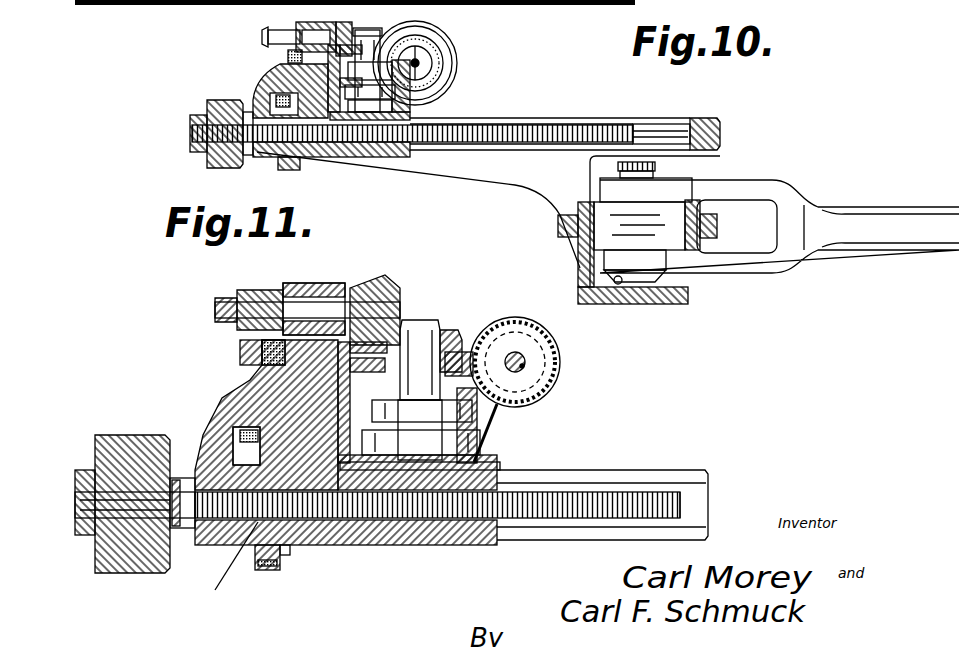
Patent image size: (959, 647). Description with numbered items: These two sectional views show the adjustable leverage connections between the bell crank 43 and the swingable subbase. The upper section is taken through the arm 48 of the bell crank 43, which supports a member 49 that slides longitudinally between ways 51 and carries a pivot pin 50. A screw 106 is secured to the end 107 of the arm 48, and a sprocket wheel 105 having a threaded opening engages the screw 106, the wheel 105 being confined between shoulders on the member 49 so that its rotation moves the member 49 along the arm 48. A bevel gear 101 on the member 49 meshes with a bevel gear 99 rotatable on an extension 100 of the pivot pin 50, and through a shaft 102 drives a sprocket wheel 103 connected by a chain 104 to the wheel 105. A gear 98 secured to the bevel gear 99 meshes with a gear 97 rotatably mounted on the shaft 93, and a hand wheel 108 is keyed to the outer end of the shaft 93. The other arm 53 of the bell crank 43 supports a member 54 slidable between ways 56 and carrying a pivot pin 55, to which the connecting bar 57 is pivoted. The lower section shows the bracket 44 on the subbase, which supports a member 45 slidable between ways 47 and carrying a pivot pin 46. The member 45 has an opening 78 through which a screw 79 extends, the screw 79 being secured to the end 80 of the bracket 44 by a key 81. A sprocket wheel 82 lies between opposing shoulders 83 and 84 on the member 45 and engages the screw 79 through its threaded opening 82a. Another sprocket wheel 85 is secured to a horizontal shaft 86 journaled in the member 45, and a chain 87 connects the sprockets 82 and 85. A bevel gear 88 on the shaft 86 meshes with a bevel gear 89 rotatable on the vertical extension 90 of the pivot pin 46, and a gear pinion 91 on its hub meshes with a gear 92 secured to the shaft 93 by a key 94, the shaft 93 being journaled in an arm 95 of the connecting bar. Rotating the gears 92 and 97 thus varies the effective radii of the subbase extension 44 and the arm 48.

In FIG. 10, the bell crank 43 is at (580, 275).
In FIG. 11, the bracket 44 is at (688, 476).
In FIG. 11, the member 45 is at (392, 545).
In FIG. 11, the pivot pin 46 is at (420, 433).
In FIG. 11, the ways 47 is at (695, 495).
In FIG. 10, the arm 48 is at (428, 168).
In FIG. 10, the member 49 is at (272, 82).
In FIG. 10, the pivot pin 50 is at (355, 152).
In FIG. 10, the ways 51 is at (656, 124).
In FIG. 10, the arm 53 is at (716, 224).
In FIG. 10, the member 54 is at (670, 208).
In FIG. 10, the pivot pin 55 is at (640, 178).
In FIG. 10, the ways 56 is at (660, 252).
In FIG. 10, the connecting bar 57 is at (792, 198).
In FIG. 11, the opening 78 is at (464, 545).
In FIG. 11, the screw 79 is at (576, 515).
In FIG. 11, the end 80 is at (142, 573).
In FIG. 11, the key 81 is at (137, 486).
In FIG. 11, the sprocket wheel 82 is at (268, 552).
In FIG. 11, the threaded opening 82a is at (255, 525).
In FIG. 11, the shoulder 83 is at (245, 533).
In FIG. 11, the shoulder 84 is at (282, 547).
In FIG. 11, the sprocket wheel 85 is at (256, 295).
In FIG. 11, the shaft 86 is at (316, 305).
In FIG. 11, the chain 87 is at (262, 352).
In FIG. 11, the bevel gear 88 is at (380, 292).
In FIG. 11, the bevel gear 89 is at (450, 332).
In FIG. 11, the vertical extension 90 is at (422, 345).
In FIG. 11, the gear pinion 91 is at (458, 360).
In FIG. 11, the gear 92 is at (560, 356).
In FIG. 10, the shaft 93 is at (420, 66).
In FIG. 11, the shaft 93 is at (518, 360).
In FIG. 11, the key 94 is at (526, 356).
In FIG. 11, the arm 95 is at (500, 414).
In FIG. 10, the gear 97 is at (440, 59).
In FIG. 10, the gear 98 is at (420, 24).
In FIG. 10, the bevel gear 99 is at (386, 48).
In FIG. 10, the extension 100 is at (366, 45).
In FIG. 10, the bevel gear 101 is at (344, 26).
In FIG. 10, the shaft 102 is at (312, 28).
In FIG. 10, the sprocket wheel 103 is at (282, 30).
In FIG. 10, the chain 104 is at (290, 55).
In FIG. 10, the sprocket wheel 105 is at (286, 160).
In FIG. 10, the screw 106 is at (486, 144).
In FIG. 10, the end 107 is at (221, 104).
In FIG. 10, the hand wheel 108 is at (448, 40).